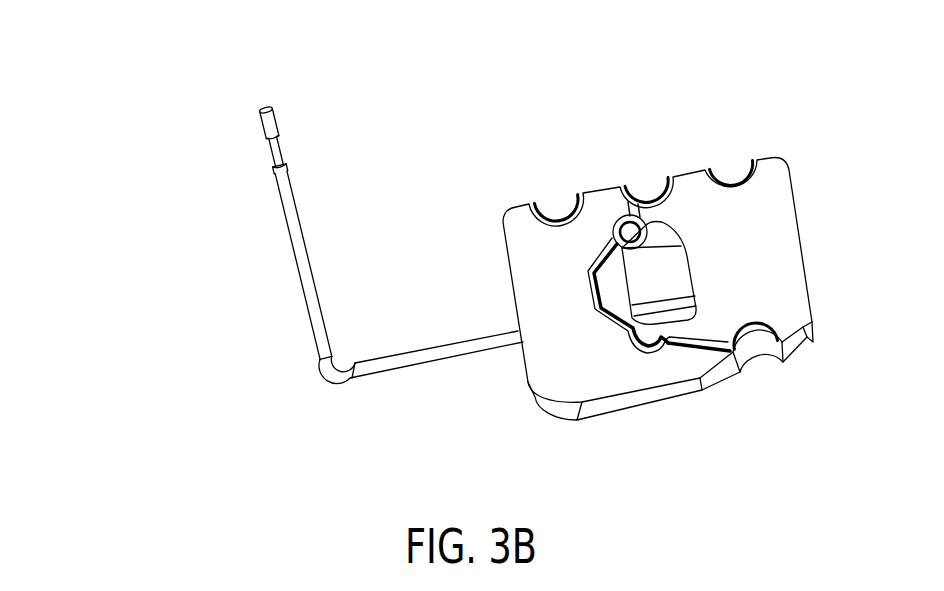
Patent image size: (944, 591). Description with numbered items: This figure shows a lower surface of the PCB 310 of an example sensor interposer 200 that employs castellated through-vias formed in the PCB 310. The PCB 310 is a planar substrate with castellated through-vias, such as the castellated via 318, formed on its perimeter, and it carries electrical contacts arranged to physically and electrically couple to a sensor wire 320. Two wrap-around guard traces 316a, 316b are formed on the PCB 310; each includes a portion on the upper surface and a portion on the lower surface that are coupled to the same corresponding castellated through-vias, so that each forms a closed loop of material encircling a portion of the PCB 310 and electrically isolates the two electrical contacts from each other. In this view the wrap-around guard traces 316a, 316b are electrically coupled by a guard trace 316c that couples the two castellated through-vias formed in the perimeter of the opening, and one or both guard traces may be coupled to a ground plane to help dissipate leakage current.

The Interposer 200 is at (195, 128).
The Sensor Wire 320 is at (275, 242).
The PCB 310 is at (778, 188).
The Castellated Via 318 is at (557, 206).
The wrap-around guard trace 316a is at (765, 358).
The wrap-around guard trace 316b is at (650, 177).
The guard trace 316c is at (594, 320).